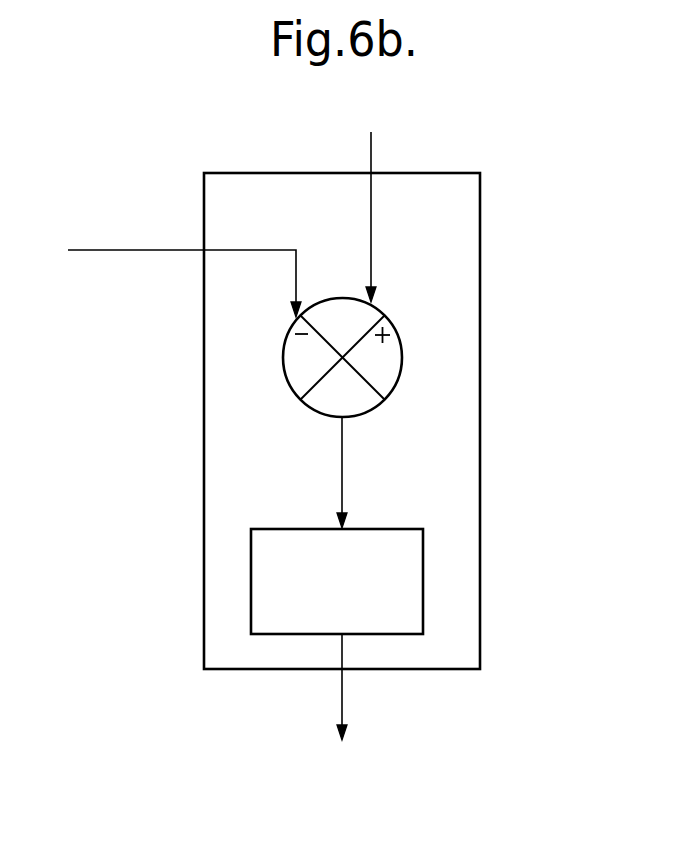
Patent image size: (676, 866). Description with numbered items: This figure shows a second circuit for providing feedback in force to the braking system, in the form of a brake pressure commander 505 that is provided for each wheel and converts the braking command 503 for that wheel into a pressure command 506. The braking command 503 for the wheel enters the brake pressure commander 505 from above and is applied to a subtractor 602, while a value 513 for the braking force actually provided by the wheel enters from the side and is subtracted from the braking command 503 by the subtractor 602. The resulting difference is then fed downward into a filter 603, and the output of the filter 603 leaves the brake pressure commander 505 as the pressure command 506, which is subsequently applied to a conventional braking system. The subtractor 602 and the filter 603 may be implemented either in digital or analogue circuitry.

The braking command 503 is at (371, 203).
The value for the braking force 513 is at (163, 277).
The subtractor 602 is at (402, 350).
The filter 603 is at (423, 572).
The brake pressure commander 505 is at (480, 652).
The pressure command 506 is at (342, 707).